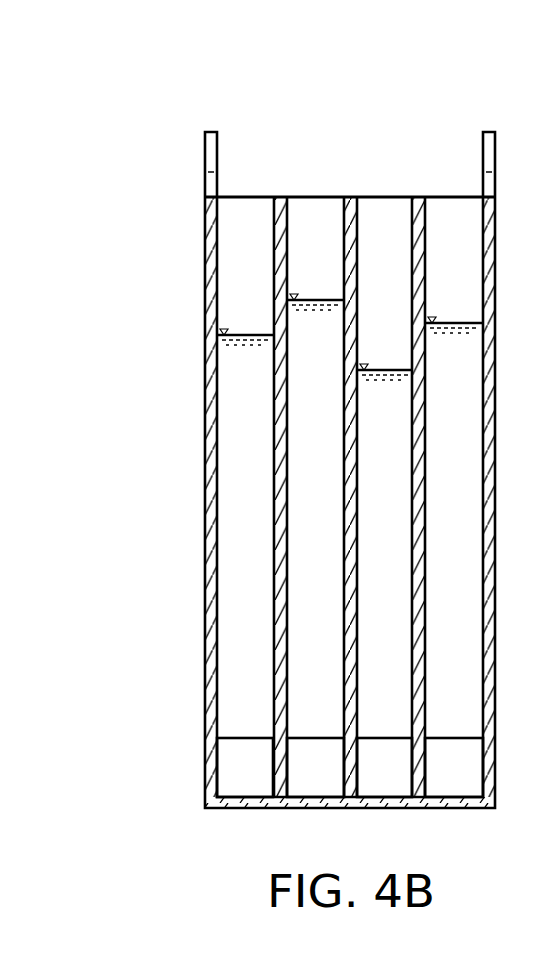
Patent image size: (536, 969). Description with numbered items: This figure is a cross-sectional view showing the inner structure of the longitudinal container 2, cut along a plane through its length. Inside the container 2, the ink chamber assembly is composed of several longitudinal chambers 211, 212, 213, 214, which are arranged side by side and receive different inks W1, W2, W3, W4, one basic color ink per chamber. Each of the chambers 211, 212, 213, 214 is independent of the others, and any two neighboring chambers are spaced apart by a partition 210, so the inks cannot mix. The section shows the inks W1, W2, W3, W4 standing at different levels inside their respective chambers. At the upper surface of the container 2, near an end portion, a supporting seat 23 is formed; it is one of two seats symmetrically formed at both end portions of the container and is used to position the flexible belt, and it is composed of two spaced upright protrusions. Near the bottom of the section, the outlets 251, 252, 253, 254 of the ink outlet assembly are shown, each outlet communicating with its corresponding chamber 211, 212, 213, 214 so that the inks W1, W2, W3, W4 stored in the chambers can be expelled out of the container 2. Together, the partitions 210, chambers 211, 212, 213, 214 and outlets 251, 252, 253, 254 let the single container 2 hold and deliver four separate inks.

The container 2 is at (70, 127).
The supporting seat 23 is at (170, 63).
The partition 210 is at (282, 197).
The chamber 211 is at (454, 557).
The chamber 212 is at (384, 580).
The chamber 213 is at (315, 545).
The chamber 214 is at (245, 563).
The outlet 251 is at (454, 767).
The outlet 252 is at (384, 767).
The outlet 253 is at (315, 767).
The outlet 254 is at (245, 767).
The ink W1 is at (454, 348).
The ink W2 is at (384, 394).
The ink W3 is at (315, 324).
The ink W4 is at (245, 359).